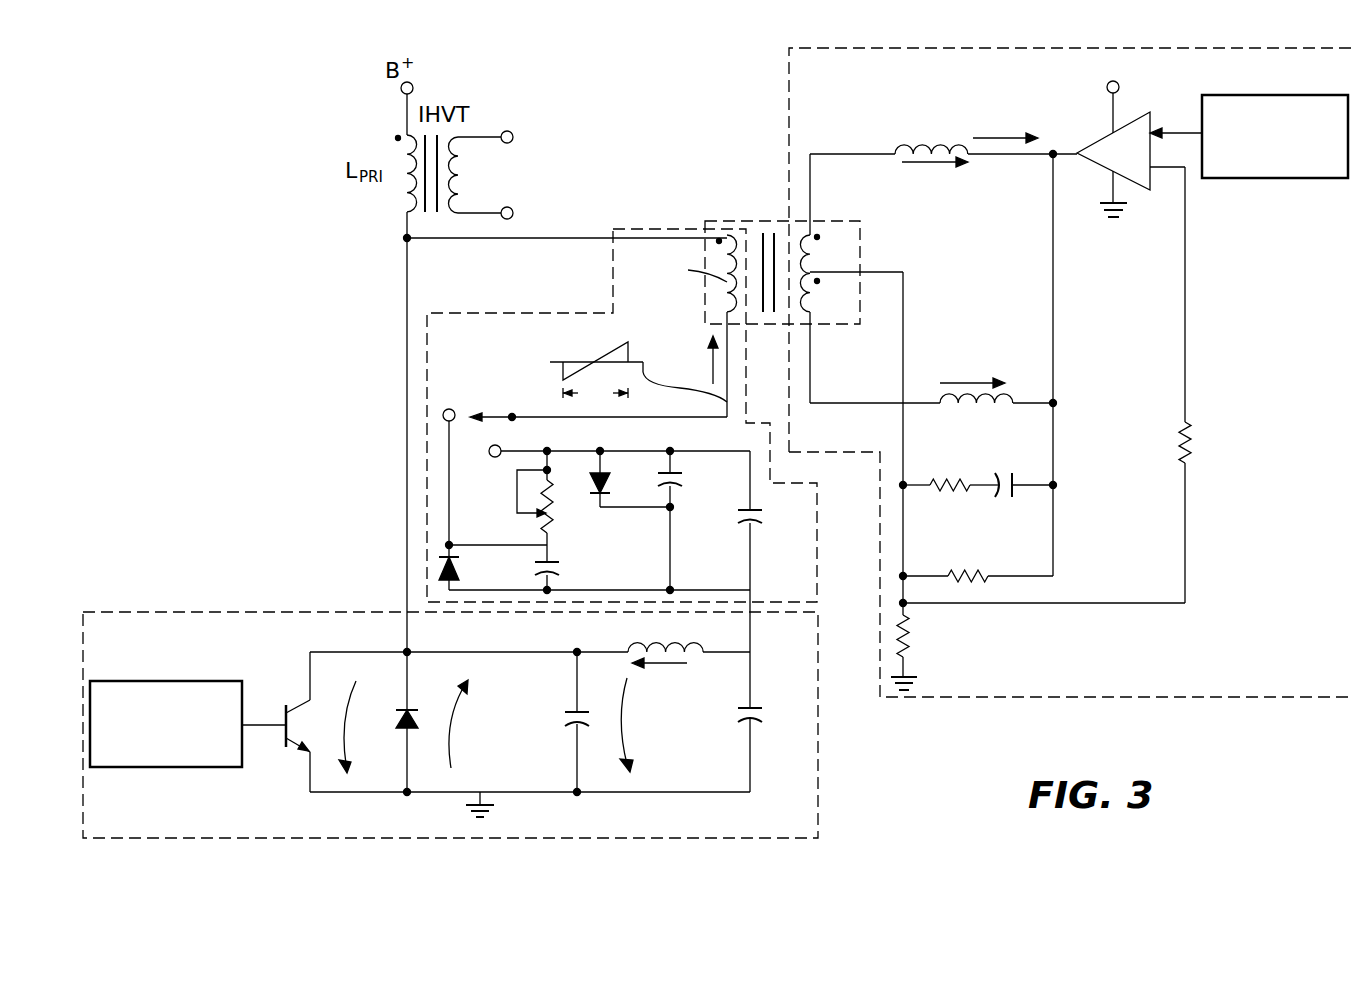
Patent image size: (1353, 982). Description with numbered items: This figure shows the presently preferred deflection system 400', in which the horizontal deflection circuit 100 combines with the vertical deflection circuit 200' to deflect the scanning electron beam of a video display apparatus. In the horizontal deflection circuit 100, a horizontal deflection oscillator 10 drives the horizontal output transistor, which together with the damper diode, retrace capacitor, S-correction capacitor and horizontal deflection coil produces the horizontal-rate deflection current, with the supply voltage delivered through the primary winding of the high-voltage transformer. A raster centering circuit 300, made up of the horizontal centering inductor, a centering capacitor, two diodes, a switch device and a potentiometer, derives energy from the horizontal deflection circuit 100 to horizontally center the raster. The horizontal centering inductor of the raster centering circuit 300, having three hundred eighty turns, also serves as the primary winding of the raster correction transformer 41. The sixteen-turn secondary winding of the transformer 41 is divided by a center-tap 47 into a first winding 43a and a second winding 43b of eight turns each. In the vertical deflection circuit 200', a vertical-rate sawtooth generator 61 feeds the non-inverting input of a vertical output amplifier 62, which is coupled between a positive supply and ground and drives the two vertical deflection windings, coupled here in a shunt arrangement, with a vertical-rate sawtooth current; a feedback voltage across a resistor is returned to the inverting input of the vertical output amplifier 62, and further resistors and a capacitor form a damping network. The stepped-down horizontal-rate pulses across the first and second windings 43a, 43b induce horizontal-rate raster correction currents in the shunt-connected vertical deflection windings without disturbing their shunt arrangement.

The horizontal deflection oscillator 10 is at (186, 681).
The raster correction transformer 41 is at (757, 276).
The first winding 43a is at (800, 232).
The second winding 43b is at (805, 313).
The center-tap 47 is at (903, 305).
The vertical-rate sawtooth generator 61 is at (1293, 95).
The vertical output amplifier 62 is at (1090, 140).
The horizontal deflection circuit 100 is at (499, 725).
The vertical deflection circuit 200' is at (997, 559).
The raster centering circuit 300 is at (653, 429).
The deflection system 400' is at (1071, 389).